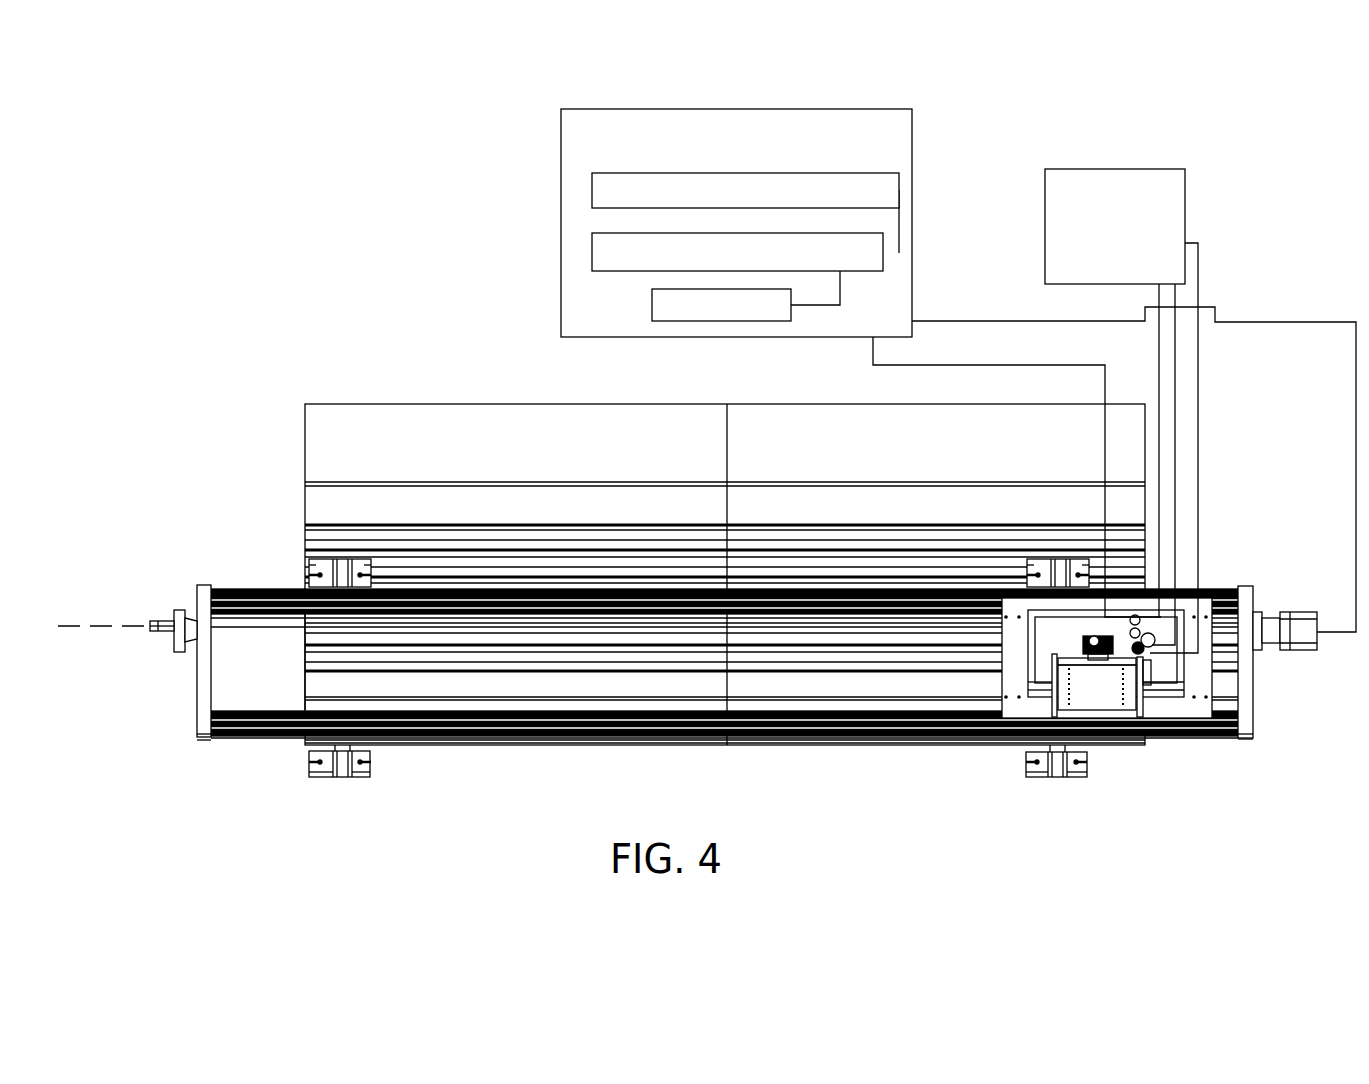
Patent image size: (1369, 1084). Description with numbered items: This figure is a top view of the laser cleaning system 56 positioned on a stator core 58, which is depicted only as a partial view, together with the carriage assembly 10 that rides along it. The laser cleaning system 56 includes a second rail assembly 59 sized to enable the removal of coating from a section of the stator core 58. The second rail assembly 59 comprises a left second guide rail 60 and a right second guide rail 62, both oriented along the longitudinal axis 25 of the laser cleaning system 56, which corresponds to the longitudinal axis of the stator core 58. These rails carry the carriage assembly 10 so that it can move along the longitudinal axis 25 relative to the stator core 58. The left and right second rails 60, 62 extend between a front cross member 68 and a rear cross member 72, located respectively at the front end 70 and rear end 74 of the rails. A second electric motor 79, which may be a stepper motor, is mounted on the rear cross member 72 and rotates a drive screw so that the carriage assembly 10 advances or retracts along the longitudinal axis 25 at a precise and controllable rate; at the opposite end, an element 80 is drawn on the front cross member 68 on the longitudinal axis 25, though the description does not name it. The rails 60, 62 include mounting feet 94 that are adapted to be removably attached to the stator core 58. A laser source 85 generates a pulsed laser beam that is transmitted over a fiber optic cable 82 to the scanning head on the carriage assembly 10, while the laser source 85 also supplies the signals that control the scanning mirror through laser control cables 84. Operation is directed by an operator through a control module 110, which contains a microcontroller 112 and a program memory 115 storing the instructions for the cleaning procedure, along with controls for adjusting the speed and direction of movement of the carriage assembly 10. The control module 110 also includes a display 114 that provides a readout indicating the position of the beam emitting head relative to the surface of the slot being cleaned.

The carriage assembly 10 is at (1137, 768).
The longitudinal axis 25 is at (68, 625).
The laser cleaning system 56 is at (791, 815).
The stator core 58 is at (826, 404).
The second rail assembly 59 is at (577, 748).
The left second guide rail 60 is at (258, 740).
The right second guide rail 62 is at (243, 588).
The front cross member 68 is at (200, 740).
The front end 70 is at (121, 691).
The rear cross member 72 is at (1243, 586).
The rear end 74 is at (1268, 770).
The second electric motor 79 is at (1303, 650).
The spindle flange 80 is at (183, 610).
The fiber optic cable 82 is at (1159, 332).
The laser control cables 84 is at (1175, 383).
The laser source 85 is at (1185, 190).
The mounting feet 94 is at (358, 560).
The control module 110 is at (561, 140).
The microcontroller 112 is at (592, 250).
The display 114 is at (652, 303).
The program memory 115 is at (592, 186).